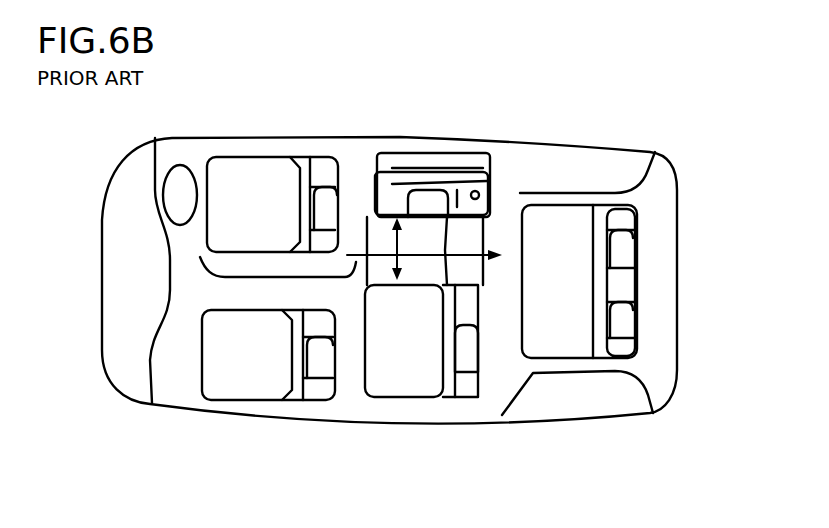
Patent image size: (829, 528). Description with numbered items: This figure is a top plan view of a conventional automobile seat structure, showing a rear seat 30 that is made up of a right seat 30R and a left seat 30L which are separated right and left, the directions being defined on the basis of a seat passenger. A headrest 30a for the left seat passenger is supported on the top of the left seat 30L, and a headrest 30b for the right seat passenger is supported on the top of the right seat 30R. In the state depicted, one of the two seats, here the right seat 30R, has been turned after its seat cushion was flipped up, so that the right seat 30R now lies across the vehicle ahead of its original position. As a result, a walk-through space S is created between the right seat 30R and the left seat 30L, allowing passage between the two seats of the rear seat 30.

The walk-through space S is at (392, 250).
The automobile rear seat 30 is at (494, 174).
The right seat 30R is at (460, 162).
The headrest for right seat passenger 30b is at (457, 207).
The left seat 30L is at (402, 372).
The headrest for left seat passenger 30a is at (478, 363).